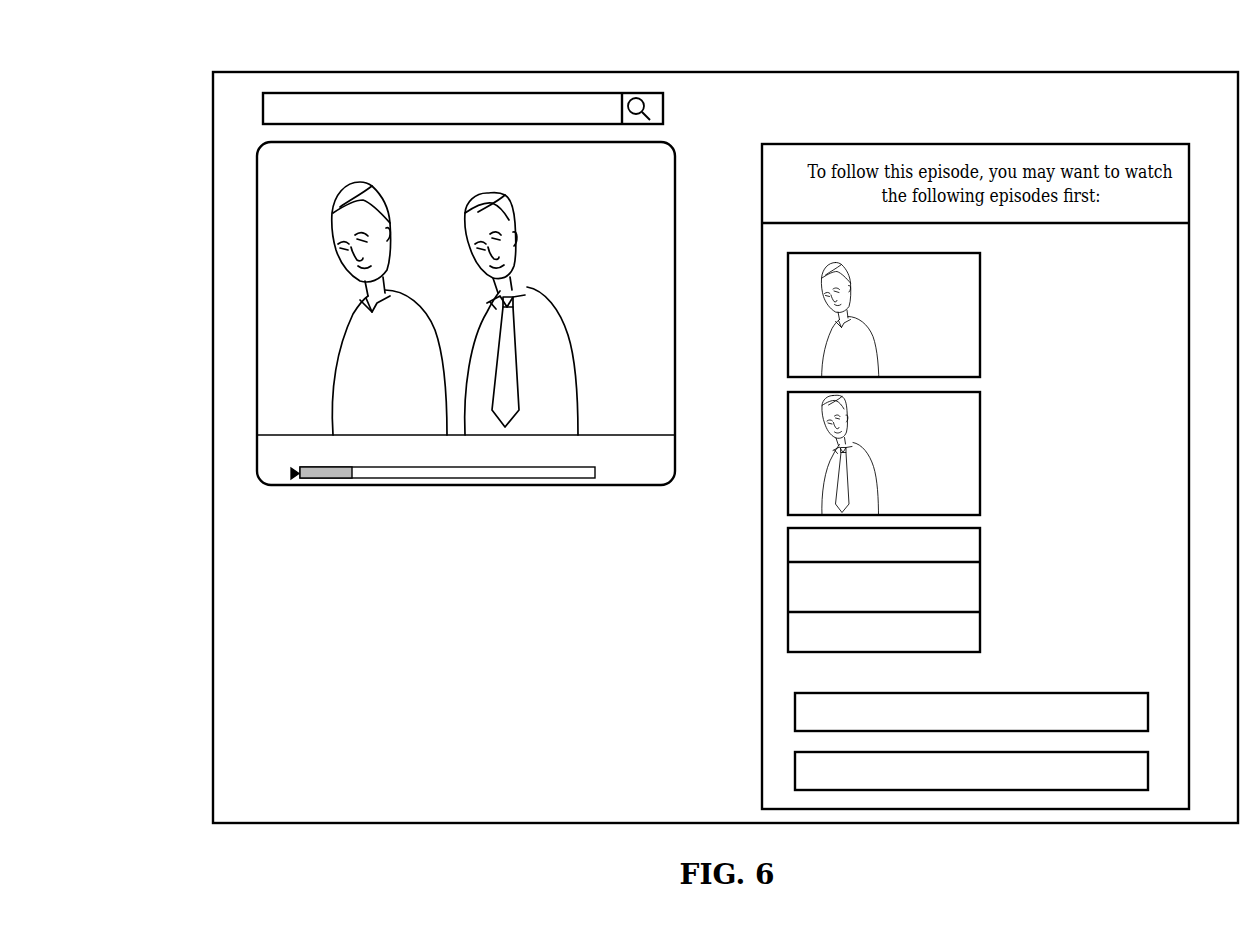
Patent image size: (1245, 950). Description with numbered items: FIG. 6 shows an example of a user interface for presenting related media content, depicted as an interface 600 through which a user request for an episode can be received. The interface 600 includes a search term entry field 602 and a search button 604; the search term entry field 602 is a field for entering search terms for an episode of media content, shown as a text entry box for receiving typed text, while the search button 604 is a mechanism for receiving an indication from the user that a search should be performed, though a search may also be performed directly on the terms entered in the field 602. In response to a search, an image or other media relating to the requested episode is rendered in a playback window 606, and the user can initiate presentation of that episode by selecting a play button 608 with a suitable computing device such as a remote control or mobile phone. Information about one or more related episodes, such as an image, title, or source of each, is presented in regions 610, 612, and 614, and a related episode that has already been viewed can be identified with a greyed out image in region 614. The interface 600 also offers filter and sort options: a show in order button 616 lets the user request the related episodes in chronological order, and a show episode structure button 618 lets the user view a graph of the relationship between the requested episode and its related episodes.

The interface 600 is at (704, 48).
The search term entry field 602 is at (262, 110).
The search button 604 is at (666, 121).
The playback window 606 is at (254, 297).
The play button 608 is at (286, 473).
The region 610 is at (982, 342).
The region 612 is at (982, 475).
The region 614 is at (982, 607).
The show in order button 616 is at (793, 712).
The show episode structure button 618 is at (793, 782).